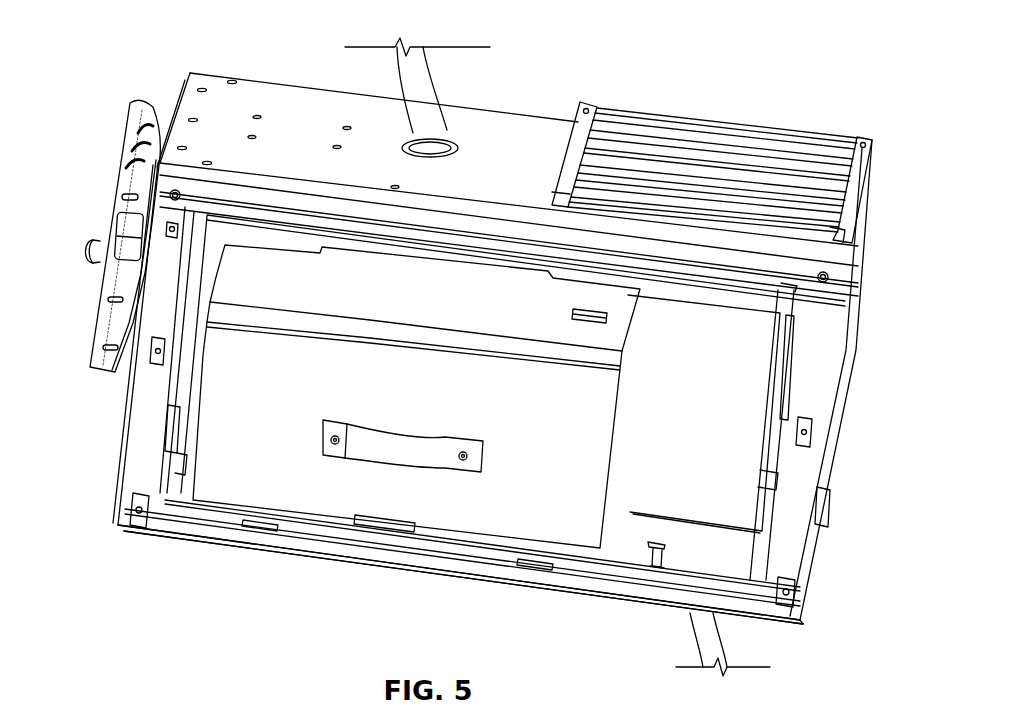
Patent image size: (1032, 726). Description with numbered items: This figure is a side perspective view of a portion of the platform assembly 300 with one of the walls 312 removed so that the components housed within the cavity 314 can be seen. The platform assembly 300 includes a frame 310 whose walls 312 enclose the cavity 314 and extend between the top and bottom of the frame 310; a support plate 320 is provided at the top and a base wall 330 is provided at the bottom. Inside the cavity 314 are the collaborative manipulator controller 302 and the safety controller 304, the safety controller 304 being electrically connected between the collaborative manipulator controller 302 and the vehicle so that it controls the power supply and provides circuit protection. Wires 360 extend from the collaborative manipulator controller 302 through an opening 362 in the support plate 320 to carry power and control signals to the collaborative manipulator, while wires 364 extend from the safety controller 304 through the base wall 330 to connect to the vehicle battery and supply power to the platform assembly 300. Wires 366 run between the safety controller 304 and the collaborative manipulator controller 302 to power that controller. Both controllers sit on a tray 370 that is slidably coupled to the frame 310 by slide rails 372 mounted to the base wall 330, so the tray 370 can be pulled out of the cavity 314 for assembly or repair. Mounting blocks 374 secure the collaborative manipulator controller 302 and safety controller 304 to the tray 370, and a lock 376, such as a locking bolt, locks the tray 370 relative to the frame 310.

The platform assembly 300 is at (685, 76).
The collaborative manipulator controller 302 is at (247, 482).
The safety controller 304 is at (697, 495).
The frame 310 is at (143, 407).
The walls 312 is at (127, 390).
The cavity 314 is at (337, 548).
The support plate 320 is at (313, 110).
The base wall 330 is at (383, 567).
The wires 360 is at (427, 80).
The opening 362 is at (457, 149).
The wires 364 is at (717, 627).
The wires 366 is at (640, 398).
The tray 370 is at (477, 553).
The slide rails 372 is at (260, 533).
The mounting blocks 374 is at (125, 530).
The lock 376 is at (650, 550).